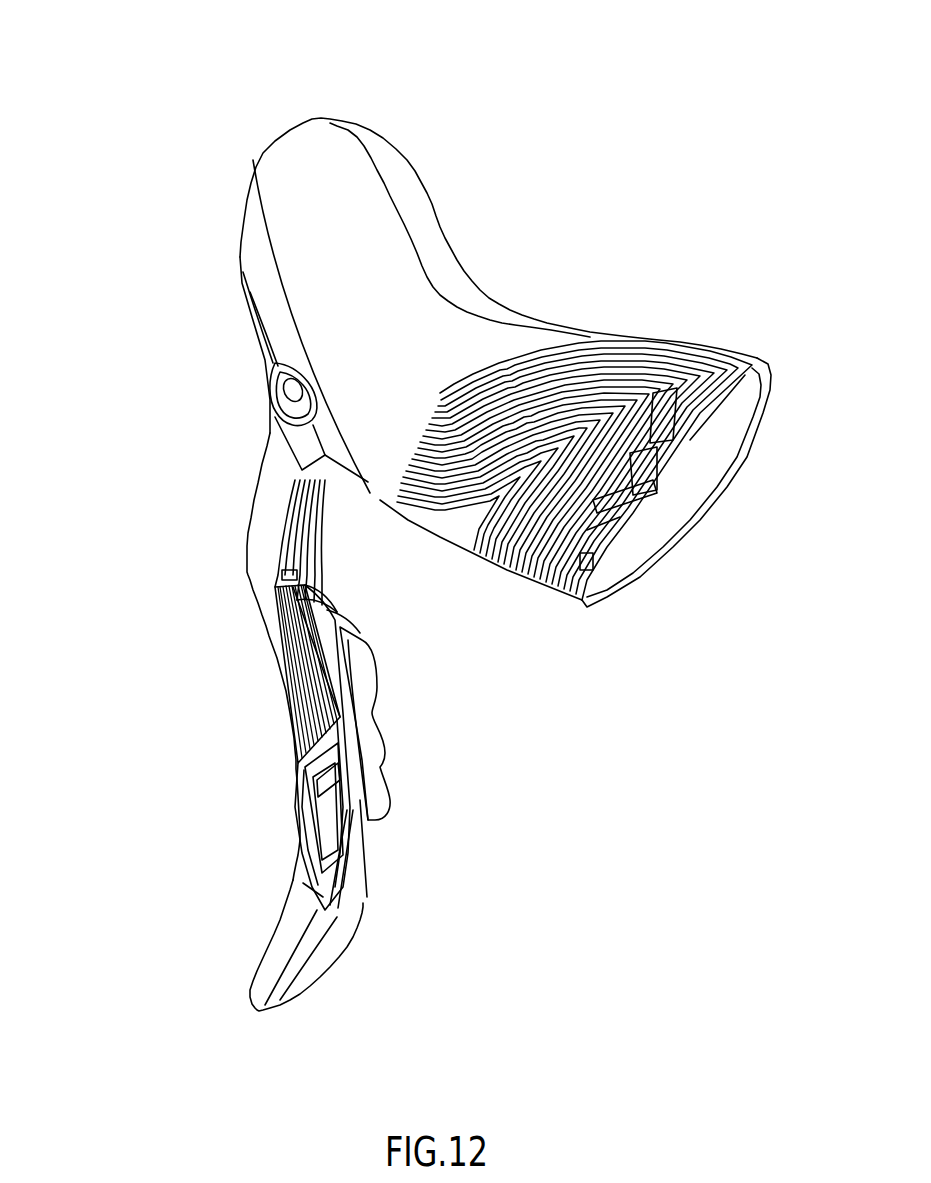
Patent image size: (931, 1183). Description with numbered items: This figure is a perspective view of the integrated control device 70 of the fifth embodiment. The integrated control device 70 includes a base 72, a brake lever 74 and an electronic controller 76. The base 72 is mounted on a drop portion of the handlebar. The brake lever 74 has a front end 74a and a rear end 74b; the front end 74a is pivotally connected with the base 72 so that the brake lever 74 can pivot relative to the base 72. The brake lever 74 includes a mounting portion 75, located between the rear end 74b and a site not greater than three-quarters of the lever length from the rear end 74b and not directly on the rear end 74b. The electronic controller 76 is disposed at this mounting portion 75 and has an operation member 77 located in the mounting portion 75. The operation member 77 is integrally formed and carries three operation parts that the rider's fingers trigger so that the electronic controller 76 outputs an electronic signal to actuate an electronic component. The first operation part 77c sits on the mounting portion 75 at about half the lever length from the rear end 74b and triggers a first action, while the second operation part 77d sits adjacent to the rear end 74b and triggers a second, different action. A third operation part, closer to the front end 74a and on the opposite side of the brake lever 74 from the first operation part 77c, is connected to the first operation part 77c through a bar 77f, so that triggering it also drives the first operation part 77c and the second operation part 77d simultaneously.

The integrated control device 70 is at (620, 170).
The base 72 is at (320, 157).
The brake lever 74 is at (260, 543).
The front end 74a is at (277, 450).
The rear end 74b is at (275, 945).
The mounting portion 75 is at (395, 722).
The electronic controller 76 is at (283, 757).
The operation member 77 is at (365, 810).
The first operation part 77c is at (287, 663).
The second operation part 77d is at (317, 838).
The bar 77f is at (313, 517).